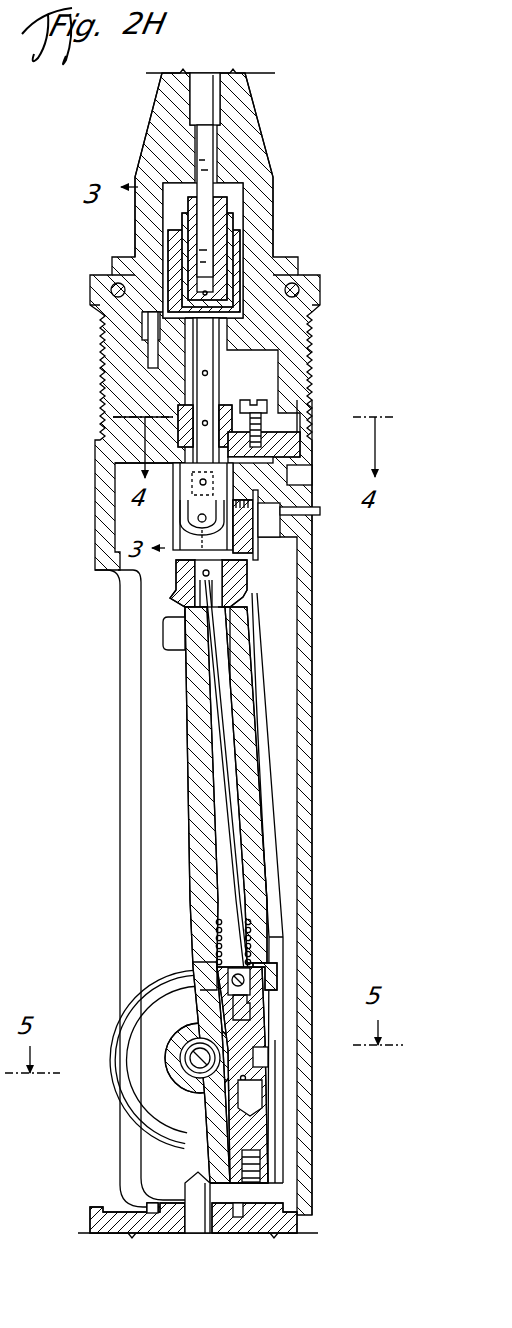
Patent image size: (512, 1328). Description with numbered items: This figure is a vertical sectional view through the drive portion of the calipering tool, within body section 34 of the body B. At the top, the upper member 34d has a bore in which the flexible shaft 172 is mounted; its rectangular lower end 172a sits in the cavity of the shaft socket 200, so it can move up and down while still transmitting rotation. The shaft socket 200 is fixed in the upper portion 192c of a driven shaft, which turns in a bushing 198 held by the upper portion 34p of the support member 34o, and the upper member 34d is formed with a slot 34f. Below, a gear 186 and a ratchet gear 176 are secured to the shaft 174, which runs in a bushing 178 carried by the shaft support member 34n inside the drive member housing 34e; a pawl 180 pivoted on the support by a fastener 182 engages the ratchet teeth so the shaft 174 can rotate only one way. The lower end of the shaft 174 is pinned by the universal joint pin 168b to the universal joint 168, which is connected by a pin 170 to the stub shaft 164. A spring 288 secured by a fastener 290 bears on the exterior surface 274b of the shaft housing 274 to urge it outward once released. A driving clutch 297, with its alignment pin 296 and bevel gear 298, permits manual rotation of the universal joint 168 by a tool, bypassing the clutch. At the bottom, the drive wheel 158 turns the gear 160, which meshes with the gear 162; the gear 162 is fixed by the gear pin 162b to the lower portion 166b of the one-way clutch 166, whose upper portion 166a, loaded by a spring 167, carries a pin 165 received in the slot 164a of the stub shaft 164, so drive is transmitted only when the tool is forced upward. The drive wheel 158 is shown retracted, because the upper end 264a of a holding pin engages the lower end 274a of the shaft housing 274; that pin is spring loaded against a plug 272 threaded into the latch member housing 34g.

The body section 34 is at (314, 678).
The body B is at (314, 714).
The upper member 34d is at (162, 108).
The flexible shaft 172 is at (195, 85).
The lower end of flexible shaft 172a is at (203, 138).
The shaft socket 200 is at (218, 205).
The upper portion of shaft 192c is at (228, 218).
The upper portion of support member 34p is at (241, 232).
The bushing 198 is at (232, 252).
The support member 34o is at (262, 330).
The gear 186 is at (183, 393).
The ratchet gear 176 is at (180, 425).
The shaft 174 is at (195, 450).
The fastener 182 is at (245, 398).
The pawl 180 is at (303, 396).
The drive member housing 34e is at (307, 417).
The shaft support member 34n is at (293, 443).
The bushing 178 is at (292, 462).
The universal joint pin 168b is at (200, 482).
The universal joint 168 is at (182, 510).
The fastener 290 is at (272, 520).
The pin 170 is at (209, 578).
The bevel gear 298 is at (176, 570).
The driving clutch 297 is at (156, 604).
The alignment pin 296 is at (165, 626).
The spring 288 is at (269, 664).
The slot 34f is at (130, 752).
The shaft housing 274 is at (186, 782).
The exterior surface of shaft housing 274b is at (257, 766).
The stub shaft 164 is at (226, 812).
The slot 164a is at (276, 992).
The pin 165 is at (258, 982).
The one-way clutch 166 is at (264, 1013).
The spring 167 is at (214, 923).
The upper portion of one-way clutch 166a is at (218, 973).
The gear 160 is at (198, 1050).
The drive wheel 158 is at (115, 1073).
The gear 162 is at (268, 1053).
The gear pin 162b is at (251, 1078).
The lower portion of one-way clutch 166b is at (254, 1100).
The lower end of shaft housing 274a is at (214, 1158).
The upper end of holding pin 264a is at (186, 1190).
The plug 272 is at (147, 1207).
The latch member housing 34g is at (263, 1222).